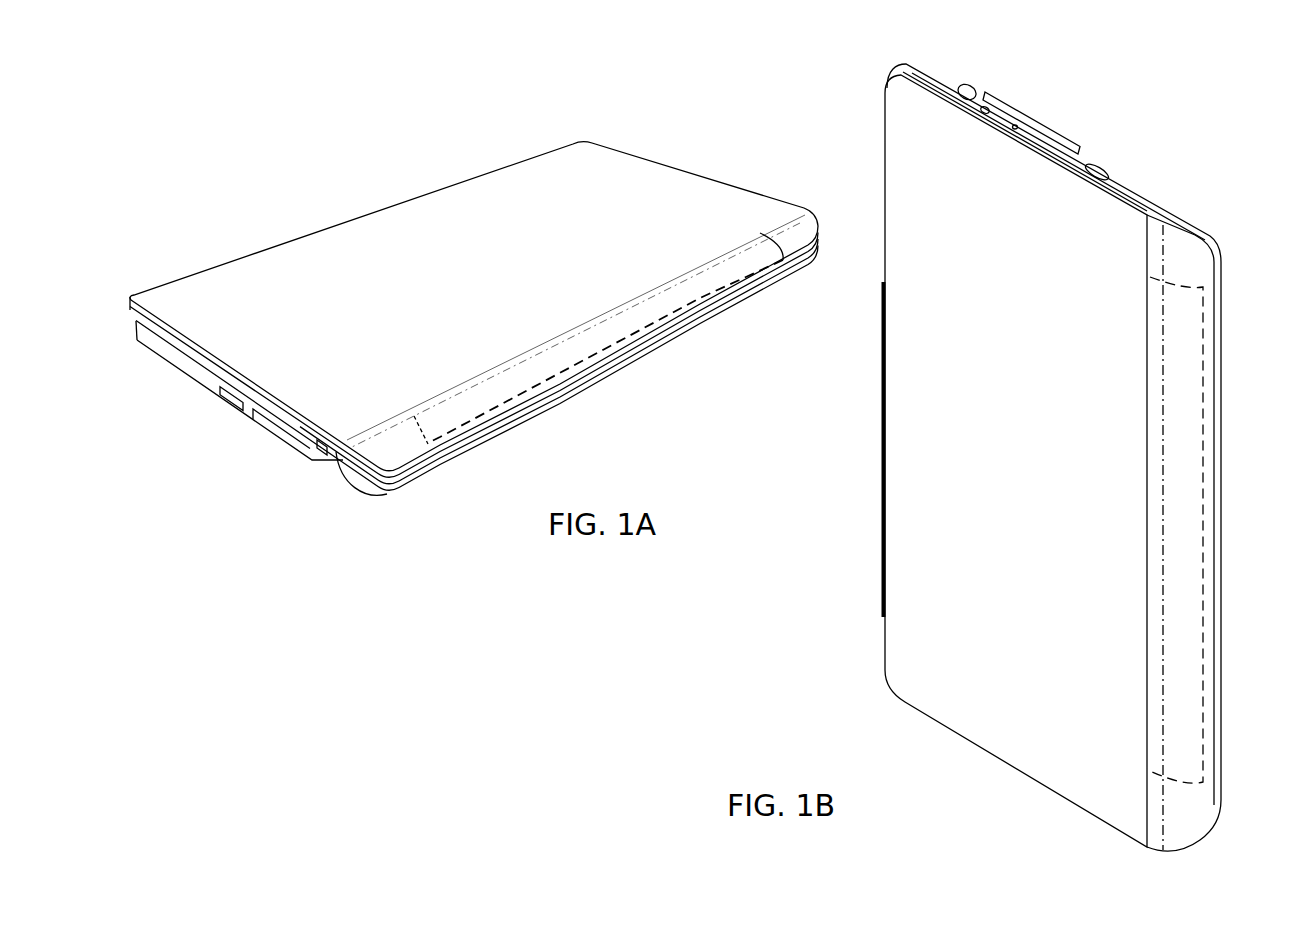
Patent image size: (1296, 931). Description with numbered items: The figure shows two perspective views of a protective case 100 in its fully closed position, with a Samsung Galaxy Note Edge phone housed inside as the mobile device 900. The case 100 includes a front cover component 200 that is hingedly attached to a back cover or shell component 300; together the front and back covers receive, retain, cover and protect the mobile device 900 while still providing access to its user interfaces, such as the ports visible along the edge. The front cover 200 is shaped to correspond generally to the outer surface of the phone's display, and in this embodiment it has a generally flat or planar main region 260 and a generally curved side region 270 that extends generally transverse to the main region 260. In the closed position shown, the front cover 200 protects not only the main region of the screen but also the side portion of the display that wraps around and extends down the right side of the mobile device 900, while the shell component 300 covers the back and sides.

In FIG. 1A, the protective case 100 is at (210, 252).
In FIG. 1A, the front cover component 200 is at (697, 177).
In FIG. 1B, the front cover component 200 is at (1030, 778).
In FIG. 1A, the main region 260 is at (328, 253).
In FIG. 1B, the main region 260 is at (980, 497).
In FIG. 1A, the curved side region 270 is at (397, 450).
In FIG. 1B, the curved side region 270 is at (1177, 812).
In FIG. 1A, the back cover or shell component 300 is at (283, 440).
In FIG. 1B, the back cover or shell component 300 is at (947, 70).
In FIG. 1A, the mobile device 900 is at (215, 370).
In FIG. 1B, the mobile device 900 is at (1040, 145).